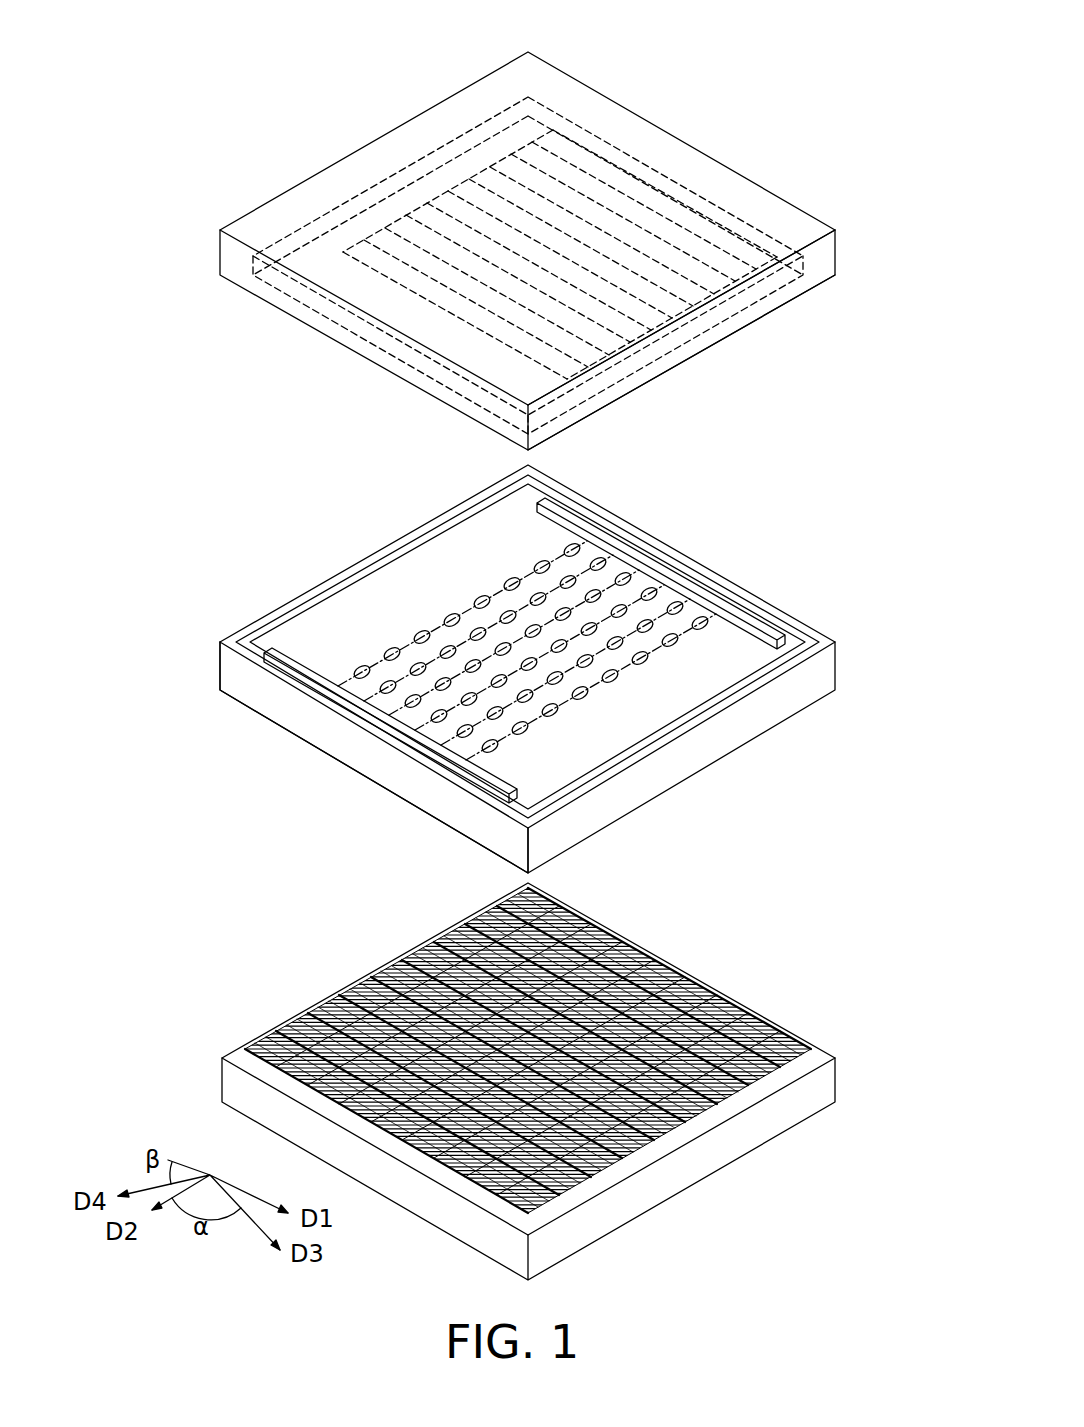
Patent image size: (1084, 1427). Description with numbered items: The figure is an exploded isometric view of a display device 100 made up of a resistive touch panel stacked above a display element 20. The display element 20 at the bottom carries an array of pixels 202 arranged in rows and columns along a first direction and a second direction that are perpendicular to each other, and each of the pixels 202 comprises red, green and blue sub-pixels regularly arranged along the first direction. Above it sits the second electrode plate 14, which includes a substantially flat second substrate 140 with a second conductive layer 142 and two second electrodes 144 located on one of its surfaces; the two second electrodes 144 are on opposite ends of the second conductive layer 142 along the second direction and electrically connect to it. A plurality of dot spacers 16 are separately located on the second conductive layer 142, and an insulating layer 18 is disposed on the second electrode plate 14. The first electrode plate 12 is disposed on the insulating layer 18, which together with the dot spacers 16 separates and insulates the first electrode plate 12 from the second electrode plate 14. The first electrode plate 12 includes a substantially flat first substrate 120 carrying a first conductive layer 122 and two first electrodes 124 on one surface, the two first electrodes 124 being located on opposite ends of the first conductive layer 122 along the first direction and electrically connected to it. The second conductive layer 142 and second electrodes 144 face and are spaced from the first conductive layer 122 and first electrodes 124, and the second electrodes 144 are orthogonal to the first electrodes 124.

The display device 100 is at (531, 28).
The first electrode plate 12 is at (713, 367).
The first substrate 120 is at (737, 322).
The first conductive layer 122 is at (637, 210).
The first electrodes 124 is at (347, 232).
The second electrode plate 14 is at (780, 595).
The second substrate 140 is at (473, 827).
The second conductive layer 142 is at (400, 640).
The second electrodes 144 is at (602, 540).
The dot spacers 16 is at (652, 585).
The insulating layer 18 is at (393, 762).
The display element 20 is at (805, 1100).
The pixels 202 is at (725, 1000).